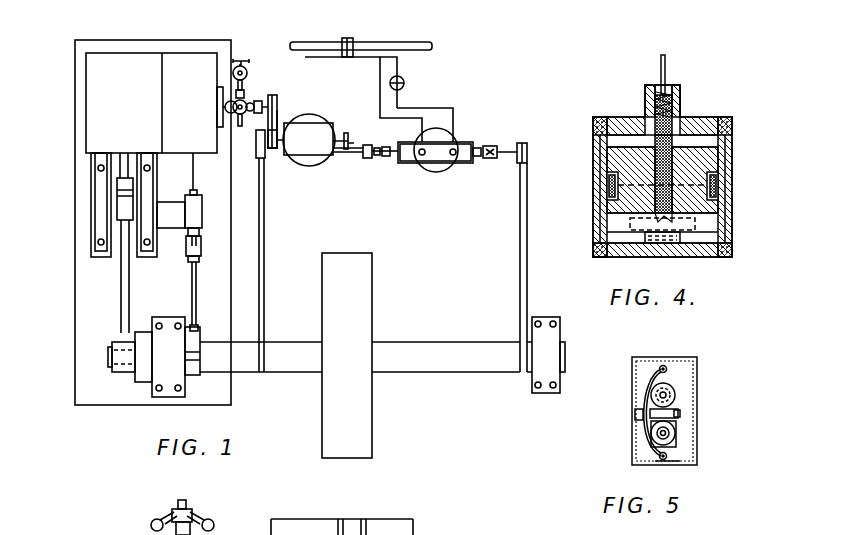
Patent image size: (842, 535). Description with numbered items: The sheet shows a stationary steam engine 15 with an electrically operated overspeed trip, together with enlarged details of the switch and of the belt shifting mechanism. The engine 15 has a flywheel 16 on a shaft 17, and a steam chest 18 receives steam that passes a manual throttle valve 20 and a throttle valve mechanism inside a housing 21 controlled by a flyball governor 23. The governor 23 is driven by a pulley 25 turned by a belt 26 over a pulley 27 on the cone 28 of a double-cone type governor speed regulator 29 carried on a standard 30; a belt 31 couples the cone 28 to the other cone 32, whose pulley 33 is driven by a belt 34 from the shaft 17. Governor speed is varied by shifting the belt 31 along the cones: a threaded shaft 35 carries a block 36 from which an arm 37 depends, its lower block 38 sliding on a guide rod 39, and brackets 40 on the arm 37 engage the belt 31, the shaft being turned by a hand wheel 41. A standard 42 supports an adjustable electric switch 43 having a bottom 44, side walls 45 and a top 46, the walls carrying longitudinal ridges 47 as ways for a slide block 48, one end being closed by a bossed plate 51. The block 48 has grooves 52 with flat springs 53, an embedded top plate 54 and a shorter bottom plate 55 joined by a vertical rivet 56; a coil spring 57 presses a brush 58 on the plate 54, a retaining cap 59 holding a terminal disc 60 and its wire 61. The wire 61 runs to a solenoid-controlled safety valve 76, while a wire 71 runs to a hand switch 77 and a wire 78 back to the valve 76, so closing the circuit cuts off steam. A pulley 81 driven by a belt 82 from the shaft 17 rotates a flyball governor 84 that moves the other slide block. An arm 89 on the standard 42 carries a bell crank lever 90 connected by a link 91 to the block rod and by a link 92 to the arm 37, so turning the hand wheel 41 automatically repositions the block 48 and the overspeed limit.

In FIG. 1, the stationary steam engine 15 is at (76, 108).
In FIG. 1, the flywheel 16 is at (358, 311).
In FIG. 1, the shaft 17 is at (425, 347).
In FIG. 1, the steam chest 18 is at (186, 75).
In FIG. 1, the manual throttle valve 20 is at (242, 58).
In FIG. 1, the housing 21 is at (240, 127).
In FIG. 1, the flyball governor 23 is at (253, 101).
In FIG. 1, the pulley 25 is at (278, 100).
In FIG. 1, the belt 26 is at (278, 120).
In FIG. 1, the pulley 27 is at (273, 149).
In FIG. 5, the cone 28 is at (676, 392).
In FIG. 1, the double-cone type governor speed regulator 29 is at (308, 150).
In FIG. 5, the double-cone type governor speed regulator 29 is at (703, 365).
In FIG. 1, the standard 30 is at (318, 166).
In FIG. 5, the belt 31 is at (679, 411).
In FIG. 5, the cone 32 is at (677, 436).
In FIG. 1, the pulley 33 is at (256, 157).
In FIG. 1, the belt 34 is at (266, 242).
In FIG. 5, the threaded shaft 35 is at (679, 358).
In FIG. 5, the block 36 is at (661, 366).
In FIG. 5, the arm 37 is at (645, 388).
In FIG. 5, the block 38 is at (659, 457).
In FIG. 5, the guide rod 39 is at (668, 459).
In FIG. 5, the brackets 40 is at (681, 416).
In FIG. 1, the hand wheel 41 is at (348, 136).
In FIG. 1, the standard 42 is at (435, 173).
In FIG. 1, the adjustable electric switch 43 is at (409, 172).
In FIG. 4, the adjustable electric switch 43 is at (588, 108).
In FIG. 4, the bottom 44 is at (697, 248).
In FIG. 4, the side walls 45 is at (716, 161).
In FIG. 4, the top 46 is at (690, 119).
In FIG. 4, the longitudinal ridges 47 is at (718, 177).
In FIG. 4, the slide block 48 is at (714, 214).
In FIG. 4, the bossed plate 51 is at (705, 141).
In FIG. 4, the grooves 52 is at (597, 161).
In FIG. 4, the flat spring 53 is at (714, 203).
In FIG. 4, the plate 54 is at (640, 140).
In FIG. 4, the plate 55 is at (637, 246).
In FIG. 4, the vertical rivet 56 is at (596, 141).
In FIG. 4, the coil spring 57 is at (674, 106).
In FIG. 4, the brush 58 is at (674, 126).
In FIG. 4, the retaining cap 59 is at (655, 88).
In FIG. 4, the terminal disc 60 is at (670, 93).
In FIG. 1, the wire 61 is at (378, 77).
In FIG. 4, the wire 61 is at (666, 58).
In FIG. 1, the wire 71 is at (440, 111).
In FIG. 1, the solenoid-controlled safety valve 76 is at (353, 40).
In FIG. 1, the hand switch 77 is at (405, 85).
In FIG. 1, the wire 78 is at (400, 68).
In FIG. 1, the pulley 81 is at (524, 142).
In FIG. 1, the belt 82 is at (519, 237).
In FIG. 1, the flyball governor 84 is at (490, 146).
In FIG. 1, the arm 89 is at (384, 157).
In FIG. 1, the bell crank lever 90 is at (364, 159).
In FIG. 1, the link 91 is at (377, 148).
In FIG. 1, the link 92 is at (345, 153).
In FIG. 5, the link 92 is at (636, 416).